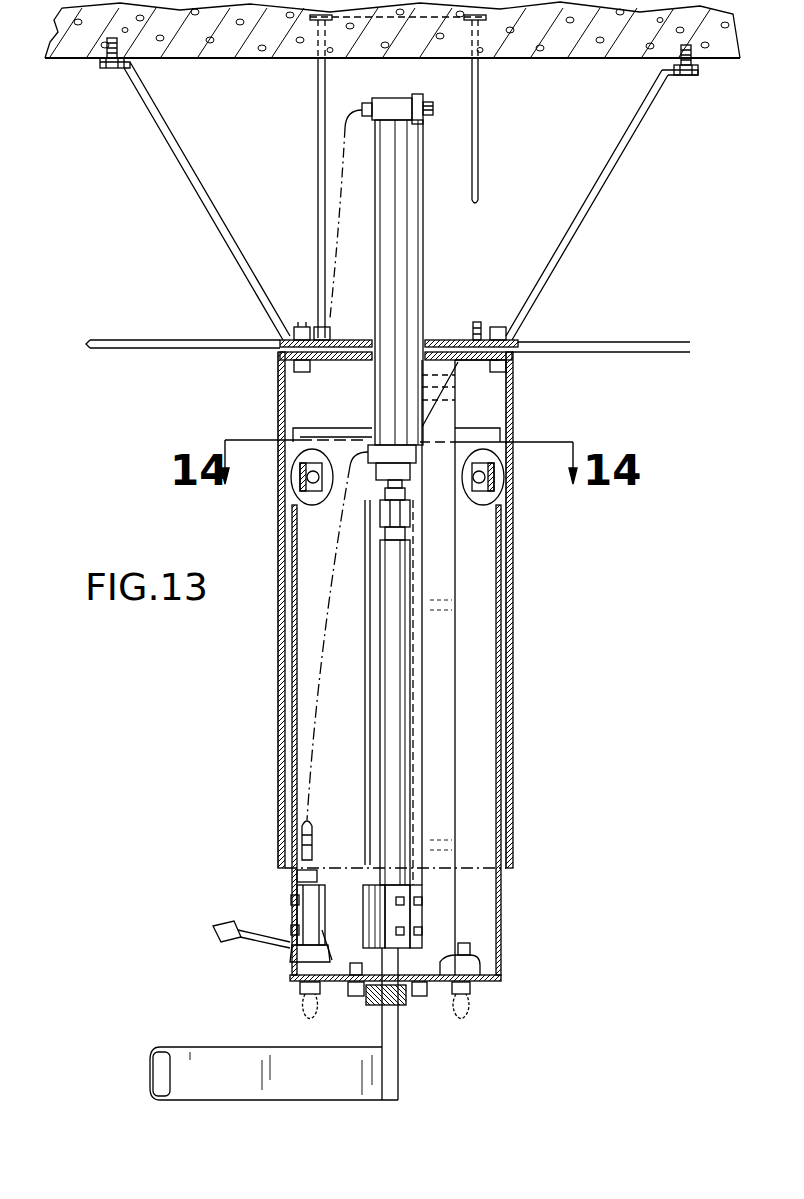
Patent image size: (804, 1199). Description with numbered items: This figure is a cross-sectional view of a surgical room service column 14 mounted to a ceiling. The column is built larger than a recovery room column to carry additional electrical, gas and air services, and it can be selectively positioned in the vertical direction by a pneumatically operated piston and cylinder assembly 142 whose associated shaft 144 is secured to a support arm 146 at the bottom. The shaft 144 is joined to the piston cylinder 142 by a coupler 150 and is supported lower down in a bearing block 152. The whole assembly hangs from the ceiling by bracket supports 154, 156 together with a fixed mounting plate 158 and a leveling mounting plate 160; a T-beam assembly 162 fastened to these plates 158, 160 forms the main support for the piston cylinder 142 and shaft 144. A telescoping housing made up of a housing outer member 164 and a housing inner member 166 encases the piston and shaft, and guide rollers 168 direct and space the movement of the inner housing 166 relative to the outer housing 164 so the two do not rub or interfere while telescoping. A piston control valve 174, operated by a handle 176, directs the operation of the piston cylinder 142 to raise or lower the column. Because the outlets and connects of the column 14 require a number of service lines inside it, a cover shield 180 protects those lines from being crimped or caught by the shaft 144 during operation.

The surgical room service column 14 is at (514, 689).
The piston and cylinder assembly 142 is at (405, 238).
The shaft 144 is at (390, 742).
The support arm 146 is at (280, 1050).
The coupler 150 is at (386, 509).
The bearing block 152 is at (390, 908).
The bracket support 154 is at (201, 198).
The bracket support 156 is at (320, 128).
The fixed mounting plate 158 is at (440, 346).
The leveling mounting plate 160 is at (485, 364).
The T-beam assembly 162 is at (445, 600).
The housing outer member 164 is at (510, 766).
The housing inner member 166 is at (500, 828).
The guide rollers 168 is at (305, 490).
The piston control valve 174 is at (308, 917).
The handle 176 is at (235, 941).
The cover shield 180 is at (366, 708).